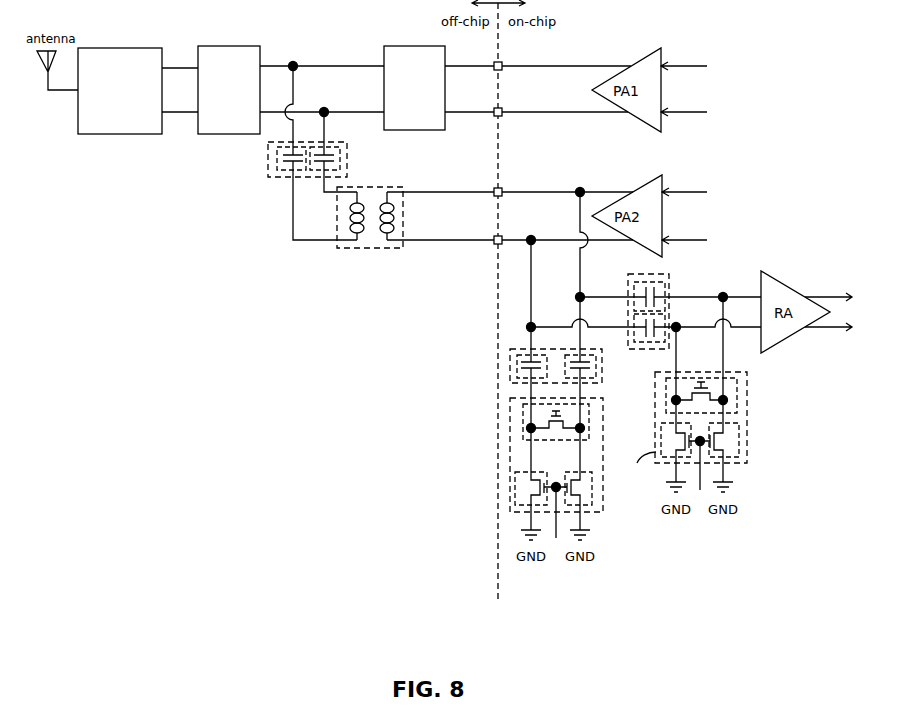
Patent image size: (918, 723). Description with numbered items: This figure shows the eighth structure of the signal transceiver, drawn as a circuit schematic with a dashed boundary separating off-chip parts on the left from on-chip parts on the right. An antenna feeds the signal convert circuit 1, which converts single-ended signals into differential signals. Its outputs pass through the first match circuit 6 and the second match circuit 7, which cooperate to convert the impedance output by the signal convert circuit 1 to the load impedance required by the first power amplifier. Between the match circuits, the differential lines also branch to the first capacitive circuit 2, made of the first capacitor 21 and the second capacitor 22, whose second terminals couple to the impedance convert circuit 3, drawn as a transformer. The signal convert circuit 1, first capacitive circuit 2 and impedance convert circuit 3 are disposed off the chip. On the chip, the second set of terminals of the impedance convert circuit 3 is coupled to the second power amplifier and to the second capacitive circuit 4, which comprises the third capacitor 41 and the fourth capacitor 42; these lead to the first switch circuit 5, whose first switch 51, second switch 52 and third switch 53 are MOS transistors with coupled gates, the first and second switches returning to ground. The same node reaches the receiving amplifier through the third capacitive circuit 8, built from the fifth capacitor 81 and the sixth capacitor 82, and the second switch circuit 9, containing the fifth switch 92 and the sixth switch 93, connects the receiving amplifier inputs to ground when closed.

The signal convert circuit 1 is at (115, 48).
The first match circuit 6 is at (228, 46).
The second match circuit 7 is at (412, 46).
The first capacitive circuit 2 is at (280, 178).
The first capacitor 21 is at (278, 161).
The second capacitor 22 is at (340, 161).
The impedance convert circuit 3 is at (367, 187).
The second capacitive circuit 4 is at (588, 351).
The third capacitor 41 is at (518, 367).
The fourth capacitor 42 is at (597, 368).
The first switch circuit 5 is at (602, 462).
The first switch 51 is at (516, 492).
The second switch 52 is at (596, 492).
The third switch 53 is at (591, 423).
The third capacitive circuit 8 is at (655, 274).
The fifth capacitor 81 is at (665, 294).
The sixth capacitor 82 is at (666, 339).
The second switch circuit 9 is at (747, 414).
The fifth switch 92 is at (740, 450).
The sixth switch 93 is at (738, 395).